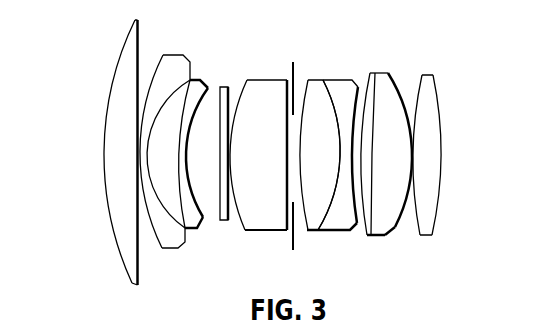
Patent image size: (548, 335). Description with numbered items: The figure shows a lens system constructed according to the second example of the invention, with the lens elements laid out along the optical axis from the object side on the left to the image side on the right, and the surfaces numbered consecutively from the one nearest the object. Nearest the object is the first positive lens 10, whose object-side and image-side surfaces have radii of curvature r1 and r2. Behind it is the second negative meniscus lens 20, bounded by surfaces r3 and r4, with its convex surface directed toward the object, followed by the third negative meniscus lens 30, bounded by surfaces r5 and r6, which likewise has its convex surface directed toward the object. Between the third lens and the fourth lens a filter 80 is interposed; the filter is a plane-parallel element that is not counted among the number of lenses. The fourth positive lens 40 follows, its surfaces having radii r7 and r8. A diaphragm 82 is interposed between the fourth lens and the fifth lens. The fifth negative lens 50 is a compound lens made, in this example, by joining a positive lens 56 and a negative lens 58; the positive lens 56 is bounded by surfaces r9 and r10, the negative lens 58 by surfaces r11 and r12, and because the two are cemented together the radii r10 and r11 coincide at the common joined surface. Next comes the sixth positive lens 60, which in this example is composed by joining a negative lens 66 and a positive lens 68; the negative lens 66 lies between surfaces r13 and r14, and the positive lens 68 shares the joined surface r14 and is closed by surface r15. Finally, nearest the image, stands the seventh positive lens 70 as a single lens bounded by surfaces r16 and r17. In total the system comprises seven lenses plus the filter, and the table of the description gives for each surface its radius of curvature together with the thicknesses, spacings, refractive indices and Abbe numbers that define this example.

The first positive lens 10 is at (106, 166).
The second negative meniscus lens 20 is at (165, 145).
The third negative meniscus lens 30 is at (181, 168).
The filter 80 is at (232, 84).
The fourth positive lens 40 is at (258, 170).
The diaphragm 82 is at (295, 75).
The fifth negative lens 50 is at (334, 165).
The positive lens 56 is at (328, 172).
The negative lens 58 is at (350, 165).
The sixth positive lens 60 is at (380, 153).
The negative lens 66 is at (376, 141).
The positive lens 68 is at (394, 140).
The seventh positive lens 70 is at (446, 159).
The radius of curvature of the first surface r1 is at (118, 60).
The radius of curvature of the second surface r2 is at (134, 301).
The radius of curvature of the third surface r3 is at (157, 65).
The radius of curvature of the fourth surface r4 is at (166, 84).
The radius of curvature of the fifth surface r5 is at (178, 133).
The radius of curvature of the sixth surface r6 is at (198, 152).
The radius of curvature of the seventh surface r7 is at (236, 112).
The radius of curvature of the eighth surface r8 is at (268, 243).
The radius of curvature of the ninth surface r9 is at (302, 128).
The radius of curvature of the tenth surface r10 is at (335, 197).
The radius of curvature of the eleventh surface r11 is at (312, 231).
The radius of curvature of the twelfth surface r12 is at (343, 140).
The radius of curvature of the thirteenth surface r13 is at (366, 210).
The radius of curvature of the fourteenth surface r14 is at (373, 153).
The radius of curvature of the fifteenth surface r15 is at (394, 150).
The radius of curvature of the sixteenth surface r16 is at (415, 113).
The radius of curvature of the seventeenth surface r17 is at (442, 158).